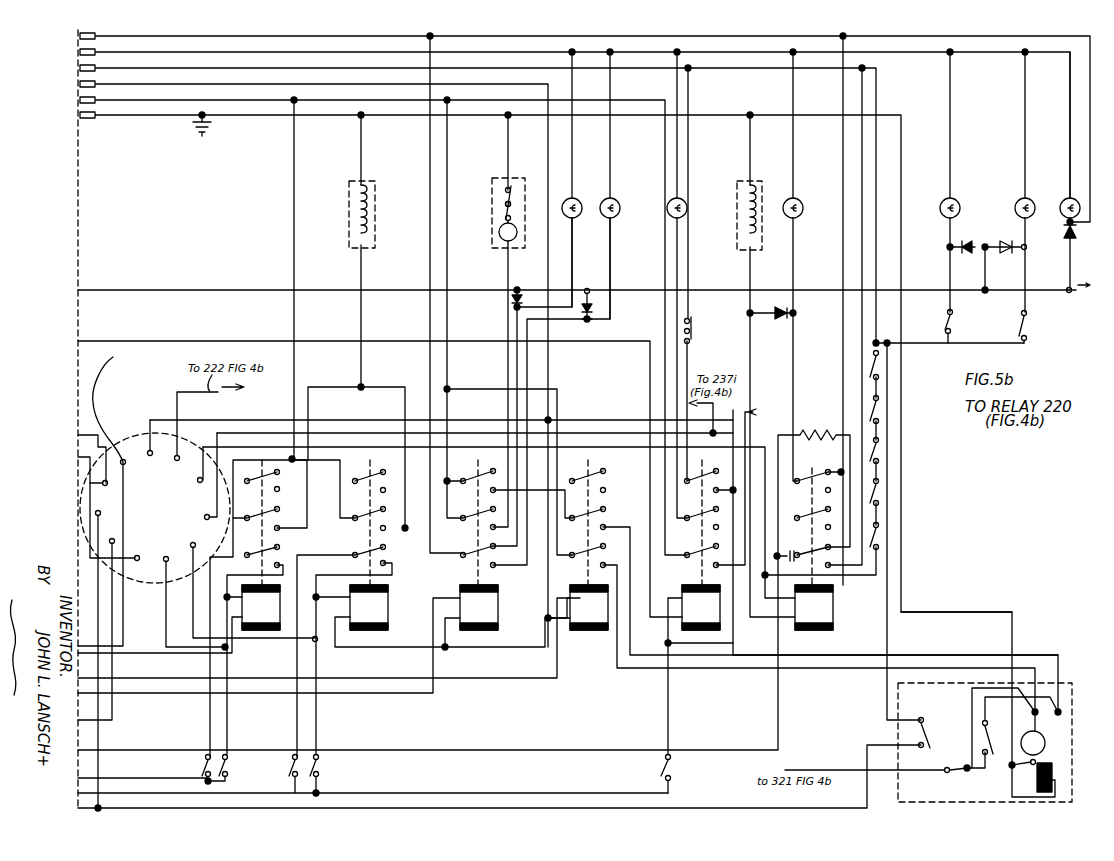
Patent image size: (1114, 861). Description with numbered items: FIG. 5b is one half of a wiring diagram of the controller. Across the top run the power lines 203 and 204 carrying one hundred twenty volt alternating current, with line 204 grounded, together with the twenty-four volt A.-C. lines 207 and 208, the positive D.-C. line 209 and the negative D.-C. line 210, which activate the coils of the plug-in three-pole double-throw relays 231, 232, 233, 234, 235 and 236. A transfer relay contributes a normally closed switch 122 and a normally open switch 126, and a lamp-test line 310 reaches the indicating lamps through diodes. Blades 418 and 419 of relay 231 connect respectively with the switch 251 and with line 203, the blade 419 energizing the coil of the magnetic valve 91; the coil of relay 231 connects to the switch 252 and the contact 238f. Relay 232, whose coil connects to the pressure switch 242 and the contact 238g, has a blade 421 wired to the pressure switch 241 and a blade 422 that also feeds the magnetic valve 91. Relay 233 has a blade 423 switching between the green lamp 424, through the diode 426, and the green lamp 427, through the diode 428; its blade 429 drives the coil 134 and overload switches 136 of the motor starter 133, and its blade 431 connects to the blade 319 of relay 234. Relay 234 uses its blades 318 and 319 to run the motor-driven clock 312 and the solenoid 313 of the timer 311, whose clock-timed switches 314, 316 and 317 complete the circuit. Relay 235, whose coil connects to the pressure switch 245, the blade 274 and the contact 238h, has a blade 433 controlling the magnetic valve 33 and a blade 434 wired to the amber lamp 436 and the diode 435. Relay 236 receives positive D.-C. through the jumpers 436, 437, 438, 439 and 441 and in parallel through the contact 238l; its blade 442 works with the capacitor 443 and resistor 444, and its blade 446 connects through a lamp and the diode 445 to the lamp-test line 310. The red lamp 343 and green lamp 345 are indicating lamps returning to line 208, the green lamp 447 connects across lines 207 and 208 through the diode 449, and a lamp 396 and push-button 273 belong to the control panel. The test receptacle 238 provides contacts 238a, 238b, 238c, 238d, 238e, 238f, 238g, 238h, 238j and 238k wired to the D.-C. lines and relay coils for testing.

The A.-C. line 207 is at (78, 36).
The A.-C. line 208 is at (80, 52).
The positive D.-C. line 209 is at (78, 68).
The negative D.-C. line 210 is at (80, 84).
The power line 203 is at (78, 100).
The power line 204 is at (78, 115).
The magnetic valve 91 is at (349, 216).
The motor starter 133 is at (521, 178).
The overload switches 136 is at (499, 207).
The coil 134 is at (500, 230).
The diode 426 is at (516, 293).
The diode 428 is at (592, 316).
The green lamp 424 is at (572, 218).
The green lamp 427 is at (613, 198).
The amber lamp 436 is at (683, 194).
The magnetic valve 33 is at (734, 206).
The lamp 396 is at (796, 201).
The red lamp 343 is at (955, 198).
The green lamp 345 is at (1016, 208).
The green lamp 447 is at (1063, 202).
The diode 449 is at (1072, 238).
The diode 445 is at (784, 316).
The normally closed switch 122 is at (931, 318).
The normally open switch 126 is at (1007, 318).
The lamp-test line 310 is at (1084, 302).
The push-button 273 is at (689, 341).
The diode 435 is at (752, 408).
The resistor 444 is at (826, 436).
The blade 446 is at (808, 478).
The capacitor 443 is at (805, 513).
The blade 442 is at (778, 560).
The jumper 437 is at (876, 410).
The jumper 438 is at (876, 447).
The jumper 439 is at (876, 493).
The jumper 441 is at (876, 533).
The test receptacle 238 is at (128, 450).
The contact point 238a is at (114, 492).
The contact point 238b is at (105, 483).
The contact point 238c is at (98, 513).
The contact point 238d is at (112, 541).
The contact point 238e is at (137, 558).
The contact point 238f is at (165, 556).
The contact point 238g is at (190, 546).
The contact point 238h is at (211, 517).
The contact point 238l is at (198, 482).
The contact point 238j is at (197, 426).
The contact point 238k is at (150, 447).
The blade 419 is at (263, 517).
The blade 418 is at (280, 556).
The blade 422 is at (371, 517).
The blade 421 is at (366, 555).
The blade 431 is at (483, 489).
The blade 429 is at (484, 518).
The blade 423 is at (476, 558).
The blade 319 is at (590, 514).
The blade 318 is at (588, 547).
The blade 274 is at (704, 482).
The blade 434 is at (704, 518).
The blade 433 is at (702, 558).
The relay 231 is at (179, 619).
The relay 232 is at (382, 603).
The relay 233 is at (497, 607).
The relay 234 is at (607, 614).
The relay 235 is at (676, 598).
The relay 236 is at (830, 607).
The switch 251 is at (203, 757).
The switch 252 is at (232, 758).
The pressure switch 241 is at (290, 772).
The pressure switch 242 is at (320, 764).
The pressure switch 245 is at (672, 771).
The timer 311 is at (1064, 683).
The switch 314 is at (930, 717).
The switch 316 is at (980, 736).
The switch 317 is at (946, 770).
The motor-driven clock 312 is at (1035, 738).
The solenoid 313 is at (1040, 788).